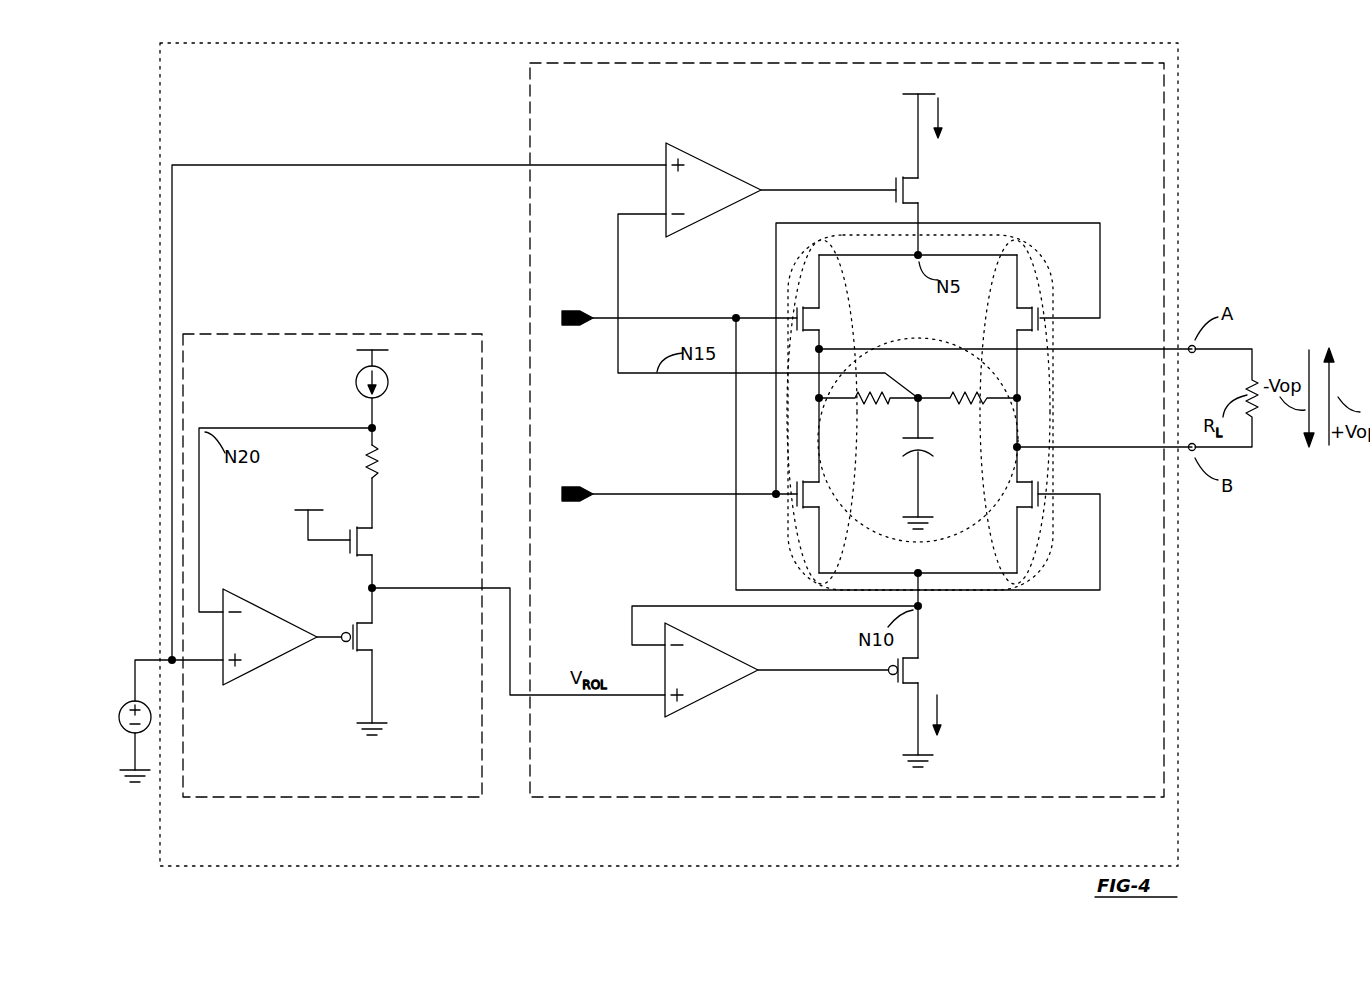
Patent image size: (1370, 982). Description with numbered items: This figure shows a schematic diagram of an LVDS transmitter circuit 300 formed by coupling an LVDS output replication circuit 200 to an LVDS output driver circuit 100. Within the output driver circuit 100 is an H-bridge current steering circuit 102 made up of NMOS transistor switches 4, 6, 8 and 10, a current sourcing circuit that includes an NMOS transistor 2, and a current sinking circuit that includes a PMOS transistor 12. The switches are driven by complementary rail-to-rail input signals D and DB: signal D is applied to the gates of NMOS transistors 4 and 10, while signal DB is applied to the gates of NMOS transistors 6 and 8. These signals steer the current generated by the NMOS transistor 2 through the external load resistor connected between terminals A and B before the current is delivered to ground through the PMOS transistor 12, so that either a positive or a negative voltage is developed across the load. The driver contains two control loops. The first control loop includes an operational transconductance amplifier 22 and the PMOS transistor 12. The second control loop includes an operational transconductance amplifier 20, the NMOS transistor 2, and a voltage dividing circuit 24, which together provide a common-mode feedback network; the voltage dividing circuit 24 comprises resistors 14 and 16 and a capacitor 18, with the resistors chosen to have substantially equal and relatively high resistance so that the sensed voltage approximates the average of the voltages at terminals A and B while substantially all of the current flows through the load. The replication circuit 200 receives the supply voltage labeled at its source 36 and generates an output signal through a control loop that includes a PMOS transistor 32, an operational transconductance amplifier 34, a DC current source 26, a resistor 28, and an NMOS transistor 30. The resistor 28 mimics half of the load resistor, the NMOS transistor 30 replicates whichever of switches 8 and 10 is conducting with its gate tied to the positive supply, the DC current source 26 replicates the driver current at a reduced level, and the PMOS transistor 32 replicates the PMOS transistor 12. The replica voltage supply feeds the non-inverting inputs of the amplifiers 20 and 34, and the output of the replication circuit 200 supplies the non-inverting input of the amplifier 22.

The NMOS transistor 2 is at (923, 178).
The NMOS transistor switch 4 is at (823, 311).
The NMOS transistor switch 6 is at (1017, 308).
The NMOS transistor switch 8 is at (823, 502).
The NMOS transistor switch 10 is at (1015, 505).
The PMOS transistor 12 is at (920, 663).
The resistor 14 is at (950, 381).
The resistor 16 is at (860, 408).
The capacitor 18 is at (935, 444).
The operational transconductance amplifier 20 is at (688, 150).
The operational transconductance amplifier 22 is at (688, 712).
The voltage dividing circuit 24 is at (945, 535).
The DC current source 26 is at (353, 382).
The resistor 28 is at (362, 462).
The NMOS transistor 30 is at (373, 560).
The PMOS transistor 32 is at (376, 652).
The operational transconductance amplifier 34 is at (245, 678).
The voltage source VROS 36 is at (120, 720).
The LVDS output driver circuit 100 is at (778, 797).
The H-bridge current steering circuit 102 is at (1005, 245).
The LVDS output replication circuit 200 is at (398, 797).
The LVDS transmitter circuit 300 is at (418, 865).